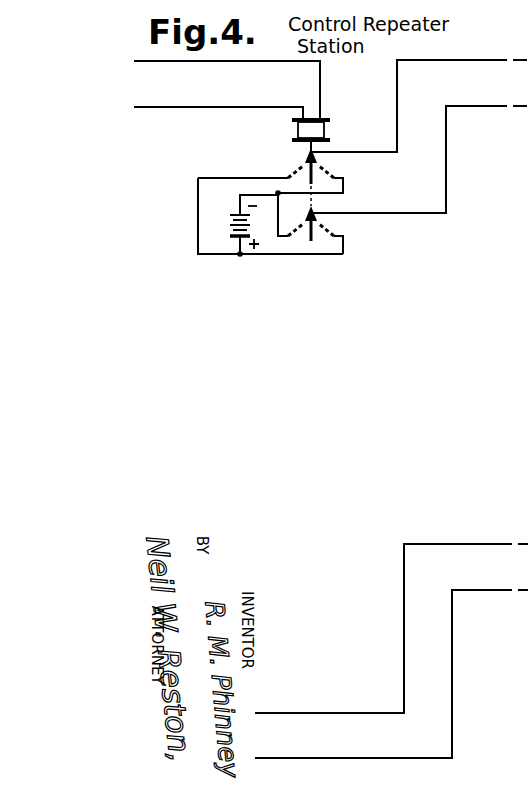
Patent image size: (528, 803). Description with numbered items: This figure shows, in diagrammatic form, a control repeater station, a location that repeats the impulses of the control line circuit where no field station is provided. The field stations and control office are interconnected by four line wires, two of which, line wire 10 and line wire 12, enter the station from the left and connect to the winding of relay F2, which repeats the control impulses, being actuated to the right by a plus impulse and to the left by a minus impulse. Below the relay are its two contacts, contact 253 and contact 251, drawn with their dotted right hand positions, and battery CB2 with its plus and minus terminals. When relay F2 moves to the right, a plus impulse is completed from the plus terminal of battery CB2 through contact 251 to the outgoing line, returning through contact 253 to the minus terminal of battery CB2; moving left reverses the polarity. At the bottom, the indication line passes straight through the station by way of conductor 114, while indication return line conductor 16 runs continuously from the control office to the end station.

The line wire 12 is at (164, 62).
The line wire 10 is at (164, 108).
The relay F2 is at (330, 130).
The contact of relay F2 253 is at (318, 173).
The contact of relay F2 251 is at (318, 230).
The battery CB2 is at (240, 214).
The conductor 114 is at (278, 708).
The indication return line conductor 16 is at (278, 753).